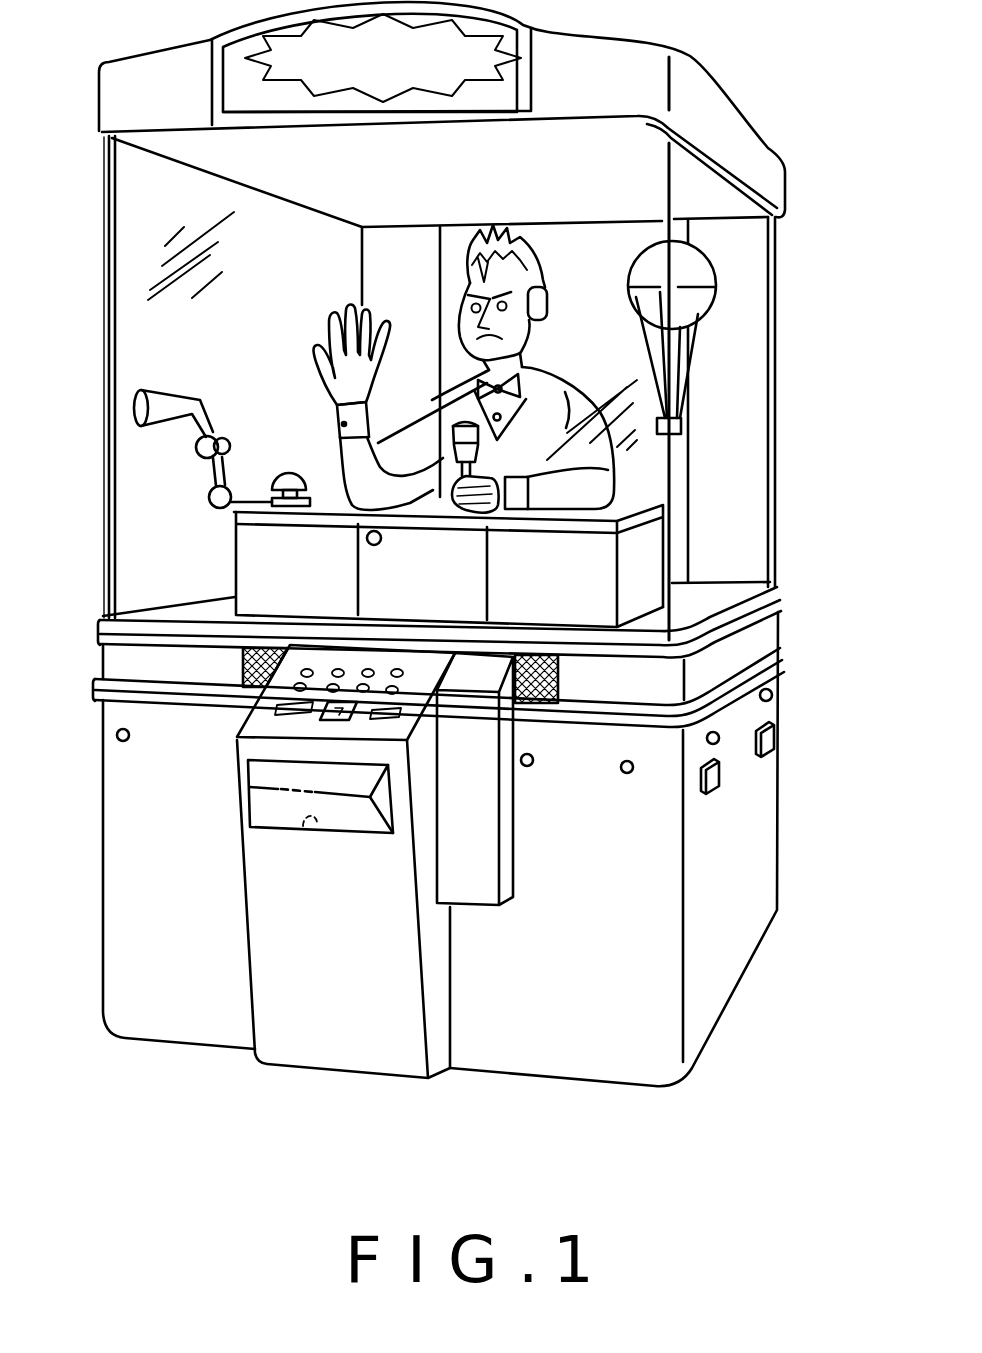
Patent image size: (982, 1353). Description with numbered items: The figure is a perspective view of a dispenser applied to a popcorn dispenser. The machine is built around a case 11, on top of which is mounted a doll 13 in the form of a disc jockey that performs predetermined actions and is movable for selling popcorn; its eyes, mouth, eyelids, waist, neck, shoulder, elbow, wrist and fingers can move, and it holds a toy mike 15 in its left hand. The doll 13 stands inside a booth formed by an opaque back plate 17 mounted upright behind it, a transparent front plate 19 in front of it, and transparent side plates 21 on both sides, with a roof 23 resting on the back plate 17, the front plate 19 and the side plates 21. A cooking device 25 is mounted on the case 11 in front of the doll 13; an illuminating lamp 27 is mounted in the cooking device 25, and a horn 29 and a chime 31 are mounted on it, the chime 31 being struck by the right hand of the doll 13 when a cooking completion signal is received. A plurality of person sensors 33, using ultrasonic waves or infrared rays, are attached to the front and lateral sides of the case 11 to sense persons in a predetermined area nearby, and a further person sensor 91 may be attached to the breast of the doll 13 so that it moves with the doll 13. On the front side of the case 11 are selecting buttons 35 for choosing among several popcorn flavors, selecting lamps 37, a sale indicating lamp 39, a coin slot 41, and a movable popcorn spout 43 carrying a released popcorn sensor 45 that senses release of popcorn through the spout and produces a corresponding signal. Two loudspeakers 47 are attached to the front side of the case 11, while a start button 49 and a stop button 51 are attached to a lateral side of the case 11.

The case 11 is at (750, 800).
The doll 13 is at (548, 250).
The toy mike 15 is at (455, 424).
The back plate 17 is at (776, 383).
The front plate 19 is at (150, 230).
The side plates 21 is at (108, 326).
The roof 23 is at (703, 114).
The cooking device 25 is at (383, 568).
The illuminating lamp 27 is at (367, 538).
The horn 29 is at (160, 404).
The chime 31 is at (280, 470).
The person sensors 33 is at (117, 735).
The selecting buttons 35 is at (293, 684).
The selecting lamps 37 is at (306, 665).
The sale indicating lamp 39 is at (323, 717).
The coin slot 41 is at (401, 714).
The popcorn spout 43 is at (239, 788).
The released popcorn sensor 45 is at (308, 815).
The loudspeakers 47 is at (243, 668).
The start button 49 is at (713, 790).
The stop button 51 is at (775, 740).
The person sensor 91 is at (558, 390).